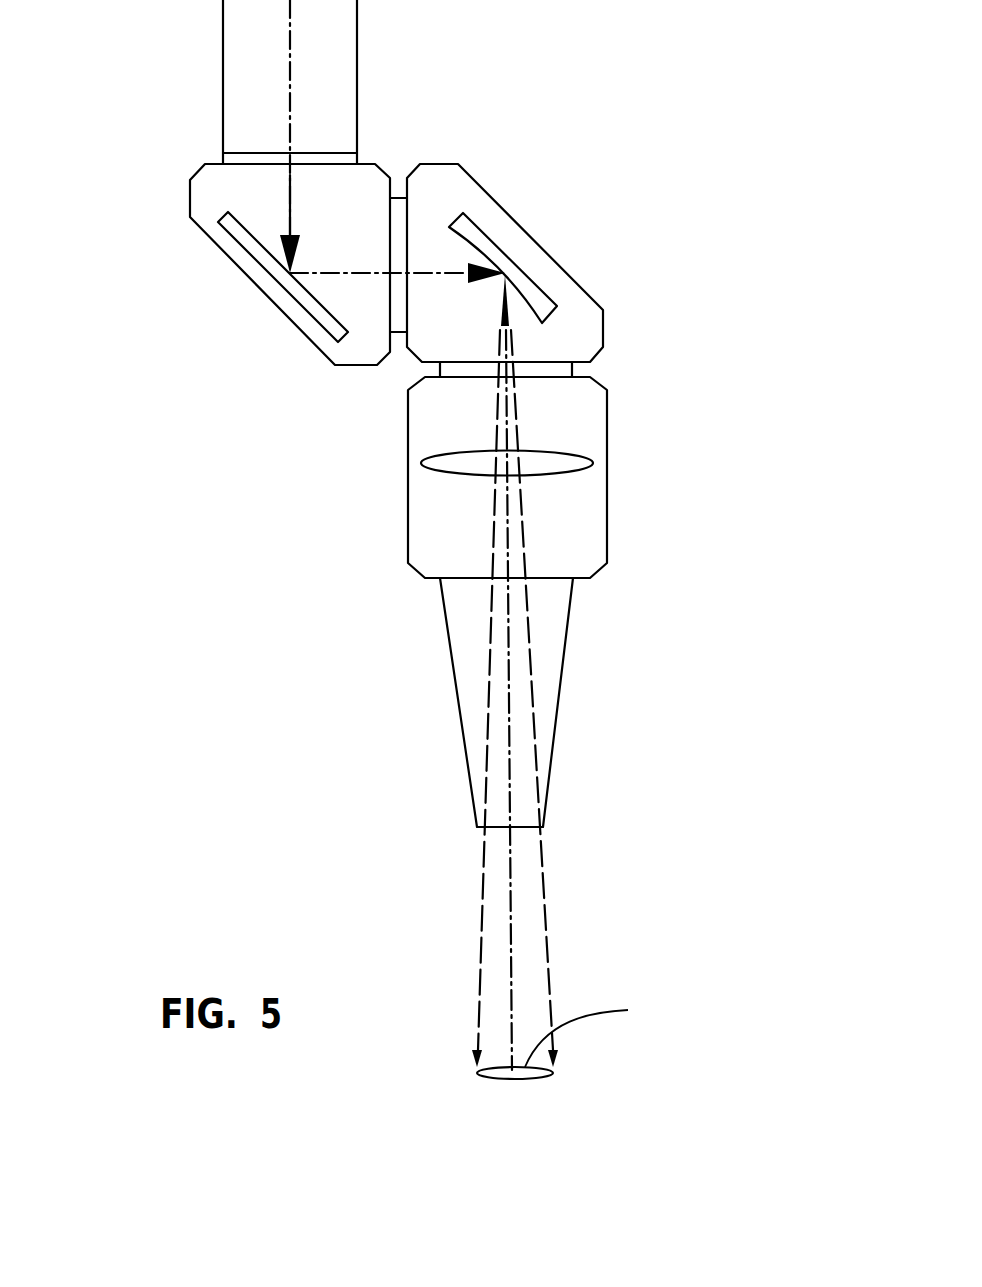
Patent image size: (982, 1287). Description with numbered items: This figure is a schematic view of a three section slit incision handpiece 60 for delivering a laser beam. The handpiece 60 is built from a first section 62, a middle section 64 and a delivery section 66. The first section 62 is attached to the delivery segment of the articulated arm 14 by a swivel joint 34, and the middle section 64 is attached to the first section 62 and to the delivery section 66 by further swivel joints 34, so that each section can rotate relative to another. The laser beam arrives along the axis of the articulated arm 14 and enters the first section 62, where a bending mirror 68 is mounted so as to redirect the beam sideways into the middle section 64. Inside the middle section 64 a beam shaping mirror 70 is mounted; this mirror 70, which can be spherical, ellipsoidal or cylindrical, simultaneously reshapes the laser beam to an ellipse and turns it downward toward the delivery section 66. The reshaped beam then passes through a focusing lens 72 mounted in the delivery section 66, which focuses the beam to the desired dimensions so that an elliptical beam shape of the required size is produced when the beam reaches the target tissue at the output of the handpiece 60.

The articulated arm 14 is at (228, 108).
The swivel joint 34 is at (402, 197).
The slit incision handpiece 60 is at (228, 475).
The first section 62 is at (329, 357).
The middle section 64 is at (542, 247).
The delivery section 66 is at (607, 537).
The mirror 68 is at (258, 278).
The beam shaping mirror 70 is at (548, 290).
The focusing lens 72 is at (593, 463).